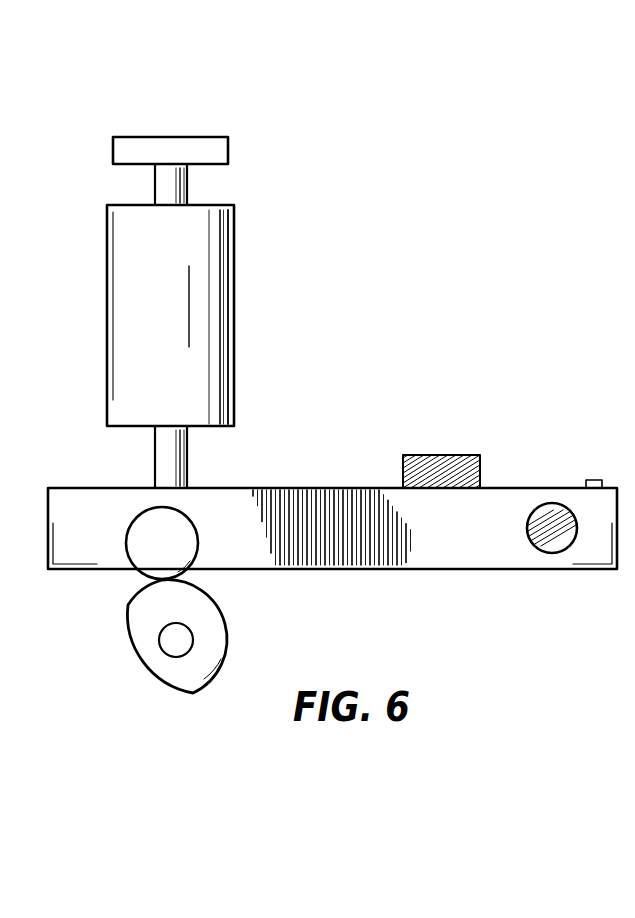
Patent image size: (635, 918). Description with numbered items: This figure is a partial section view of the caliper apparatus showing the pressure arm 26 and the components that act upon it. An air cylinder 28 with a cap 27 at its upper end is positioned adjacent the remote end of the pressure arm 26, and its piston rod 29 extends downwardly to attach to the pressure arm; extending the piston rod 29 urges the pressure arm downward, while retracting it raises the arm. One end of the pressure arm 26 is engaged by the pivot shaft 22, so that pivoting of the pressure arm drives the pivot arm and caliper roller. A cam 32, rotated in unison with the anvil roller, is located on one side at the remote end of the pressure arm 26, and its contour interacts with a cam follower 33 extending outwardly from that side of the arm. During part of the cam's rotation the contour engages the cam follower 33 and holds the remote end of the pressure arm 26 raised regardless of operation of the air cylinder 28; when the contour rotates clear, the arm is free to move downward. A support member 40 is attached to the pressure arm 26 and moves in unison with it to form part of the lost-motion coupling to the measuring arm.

The plunger cap 27 is at (170, 137).
The air cylinder 28 is at (234, 273).
The piston rod 29 is at (155, 458).
The pressure arm 26 is at (296, 489).
The support member 40 is at (441, 455).
The pivot shaft 22 is at (545, 504).
The cam follower 33 is at (133, 524).
The cam 32 is at (232, 612).